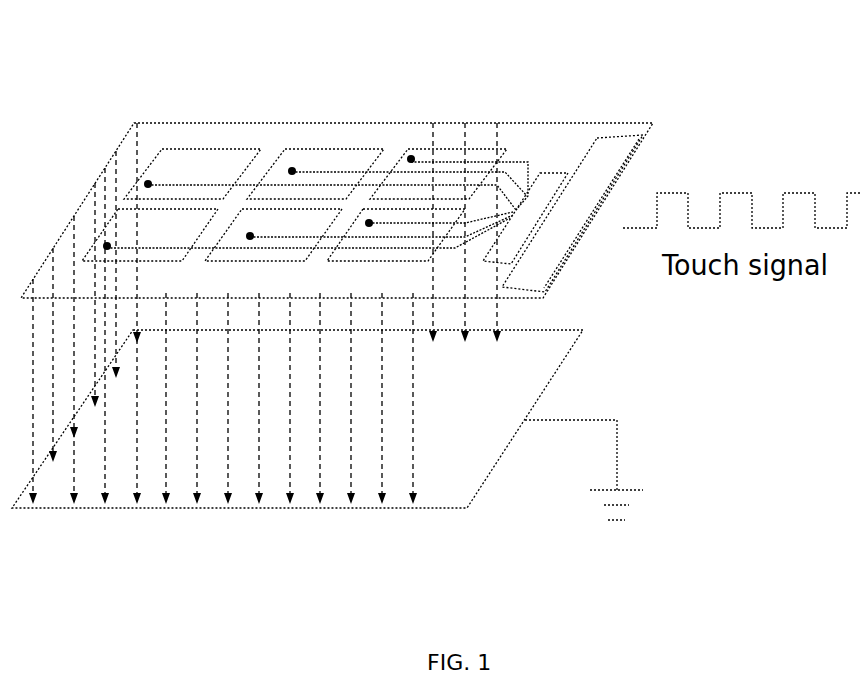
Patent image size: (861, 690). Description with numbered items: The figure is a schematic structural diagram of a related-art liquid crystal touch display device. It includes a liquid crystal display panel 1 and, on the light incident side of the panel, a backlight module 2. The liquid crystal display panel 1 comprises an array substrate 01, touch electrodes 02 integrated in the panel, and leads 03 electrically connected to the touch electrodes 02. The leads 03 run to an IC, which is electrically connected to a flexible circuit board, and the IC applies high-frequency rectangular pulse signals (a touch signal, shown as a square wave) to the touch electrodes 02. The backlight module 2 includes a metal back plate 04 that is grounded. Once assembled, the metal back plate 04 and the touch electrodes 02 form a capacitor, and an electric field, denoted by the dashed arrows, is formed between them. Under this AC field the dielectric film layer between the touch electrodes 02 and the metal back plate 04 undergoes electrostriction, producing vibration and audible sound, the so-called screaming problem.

The liquid crystal display panel 1 is at (337, 156).
The array substrate 01 is at (557, 133).
The touch electrodes 02 is at (193, 165).
The leads 03 is at (326, 172).
The backlight module 2 is at (327, 479).
The metal back plate 04 is at (460, 455).